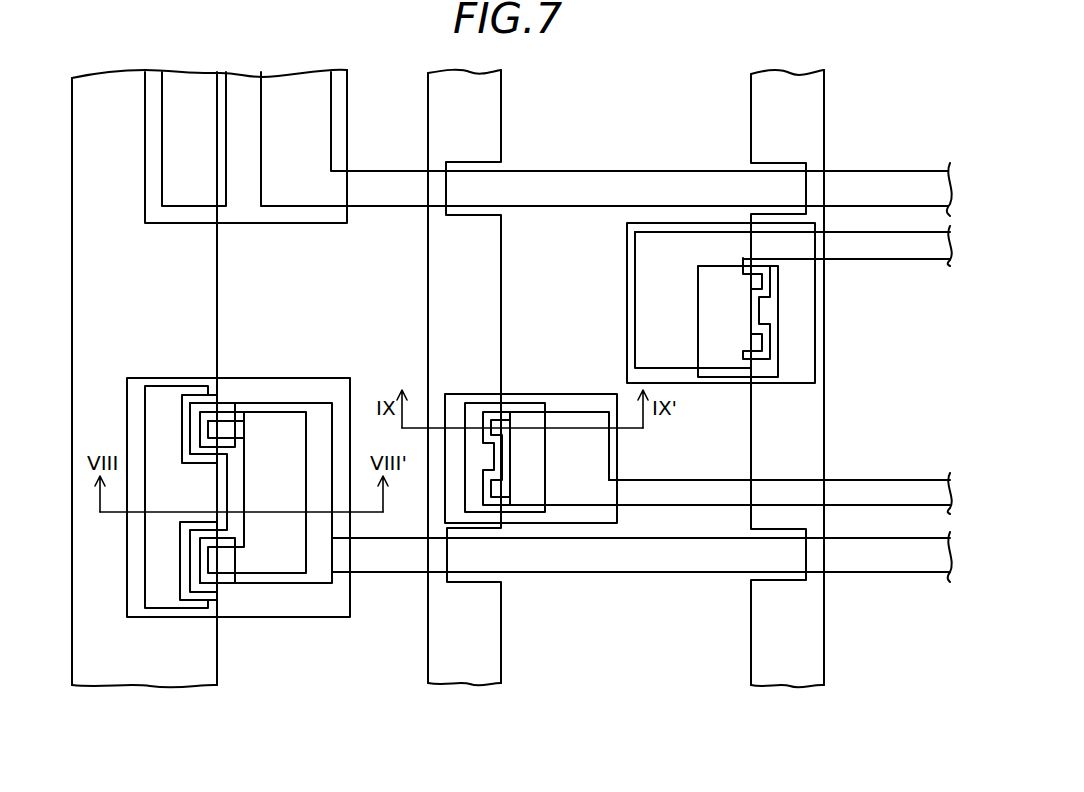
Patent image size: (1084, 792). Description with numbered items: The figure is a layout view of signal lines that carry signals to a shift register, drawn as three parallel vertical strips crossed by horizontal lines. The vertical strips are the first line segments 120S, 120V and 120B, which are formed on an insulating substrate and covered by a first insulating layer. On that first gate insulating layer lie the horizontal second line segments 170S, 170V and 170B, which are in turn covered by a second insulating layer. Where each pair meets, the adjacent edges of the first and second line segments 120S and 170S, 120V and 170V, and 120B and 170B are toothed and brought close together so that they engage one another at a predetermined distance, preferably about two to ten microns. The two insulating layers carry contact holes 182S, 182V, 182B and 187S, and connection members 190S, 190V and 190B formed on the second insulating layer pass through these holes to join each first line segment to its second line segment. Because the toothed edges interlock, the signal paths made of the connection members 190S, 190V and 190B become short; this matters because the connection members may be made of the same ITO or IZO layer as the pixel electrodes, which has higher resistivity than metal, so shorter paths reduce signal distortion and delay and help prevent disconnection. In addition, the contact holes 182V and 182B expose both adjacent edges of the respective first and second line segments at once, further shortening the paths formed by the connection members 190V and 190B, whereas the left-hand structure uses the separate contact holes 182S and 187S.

The first line segment 120S is at (148, 687).
The first line segment 120V is at (465, 685).
The first line segment 120B is at (790, 687).
The second line segment 170S is at (385, 573).
The second line segment 170V is at (683, 507).
The second line segment 170B is at (891, 260).
The contact hole 182S is at (190, 382).
The contact hole 182V is at (512, 400).
The contact hole 182B is at (781, 286).
The contact hole 187S is at (317, 400).
The connection member 190S is at (273, 377).
The connection member 190V is at (572, 392).
The connection member 190B is at (815, 343).